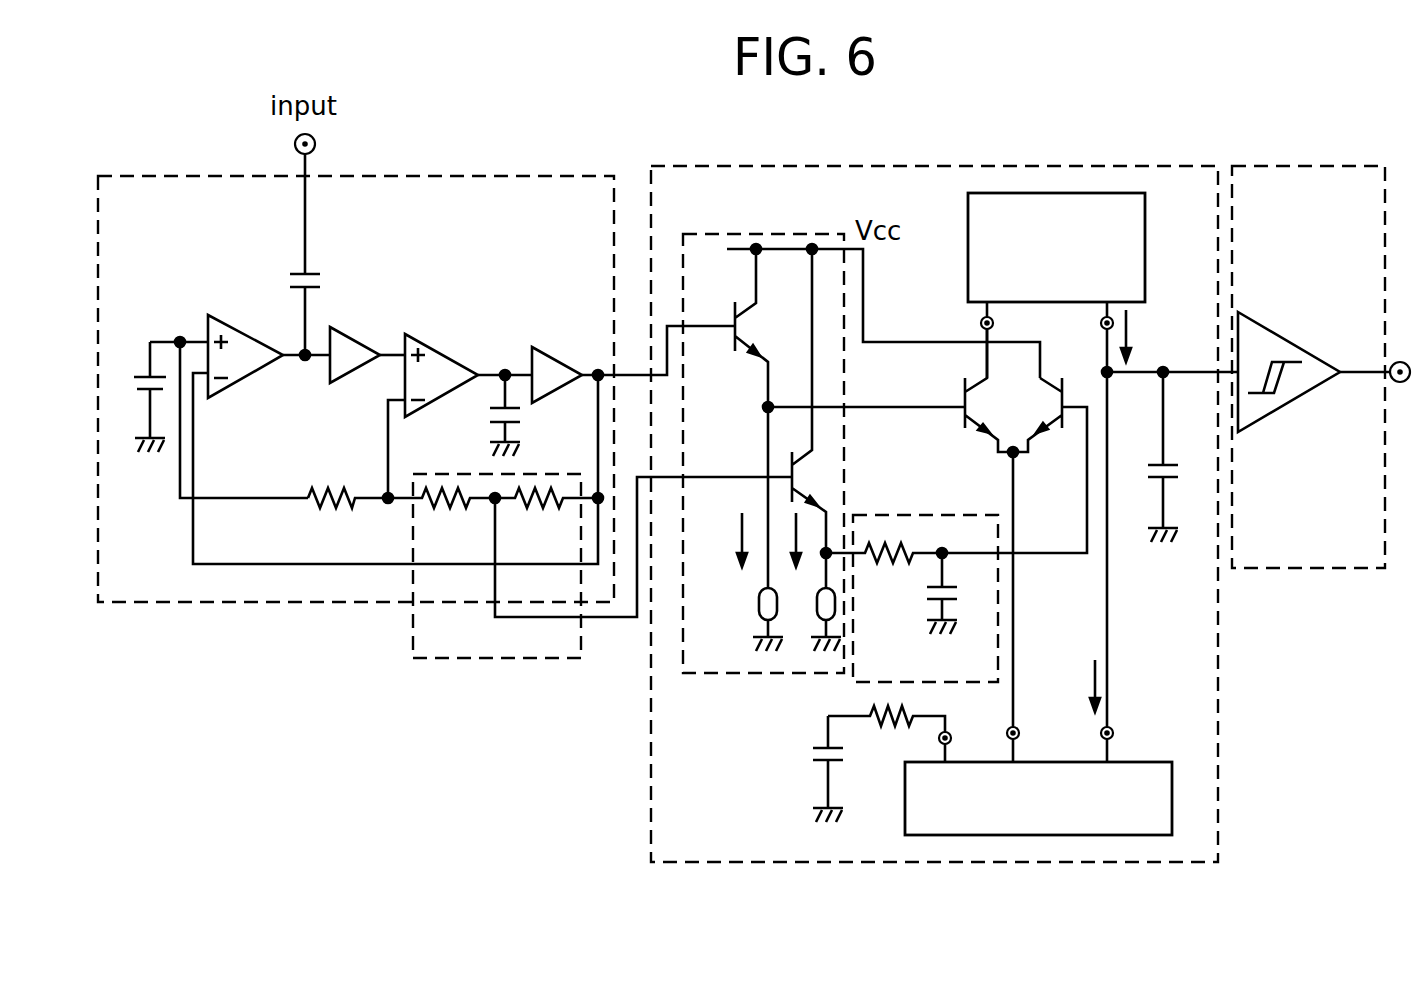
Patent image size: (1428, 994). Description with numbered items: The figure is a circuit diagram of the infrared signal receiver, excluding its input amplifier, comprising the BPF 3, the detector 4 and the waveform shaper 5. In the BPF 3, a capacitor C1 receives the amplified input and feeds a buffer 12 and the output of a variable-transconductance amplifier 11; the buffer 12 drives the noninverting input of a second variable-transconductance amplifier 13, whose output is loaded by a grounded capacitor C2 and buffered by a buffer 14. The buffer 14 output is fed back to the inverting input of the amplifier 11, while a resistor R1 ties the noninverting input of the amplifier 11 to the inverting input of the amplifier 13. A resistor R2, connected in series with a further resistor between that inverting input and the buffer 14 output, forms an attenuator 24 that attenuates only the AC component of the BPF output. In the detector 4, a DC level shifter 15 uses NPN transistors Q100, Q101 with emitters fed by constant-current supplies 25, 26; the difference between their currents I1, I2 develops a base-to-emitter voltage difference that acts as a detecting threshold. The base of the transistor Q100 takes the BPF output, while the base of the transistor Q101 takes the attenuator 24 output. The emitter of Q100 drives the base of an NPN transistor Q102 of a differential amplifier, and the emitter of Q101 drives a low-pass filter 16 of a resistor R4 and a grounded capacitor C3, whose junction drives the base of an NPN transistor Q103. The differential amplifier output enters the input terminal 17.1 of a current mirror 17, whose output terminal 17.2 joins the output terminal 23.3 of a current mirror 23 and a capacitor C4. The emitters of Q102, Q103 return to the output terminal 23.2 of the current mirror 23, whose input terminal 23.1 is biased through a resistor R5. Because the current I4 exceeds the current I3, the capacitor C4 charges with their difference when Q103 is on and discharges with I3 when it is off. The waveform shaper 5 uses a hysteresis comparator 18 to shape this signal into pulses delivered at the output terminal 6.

The BPF 3 is at (437, 174).
The detector 4 is at (1014, 167).
The waveform shaper 5 is at (1312, 166).
The output terminal 6 is at (1400, 360).
The variable-transconductance amplifier 11 is at (208, 322).
The buffer 12 is at (350, 336).
The variable-transconductance amplifier 13 is at (440, 352).
The buffer 14 is at (540, 350).
The DC level shifter 15 is at (735, 676).
The low-pass filter 16 is at (948, 512).
The current mirror 17 is at (1112, 193).
The input terminal 17.1 is at (980, 323).
The output terminal 17.2 is at (1100, 330).
The hysteresis comparator 18 is at (1280, 328).
The current mirror 23 is at (1172, 795).
The input terminal 23.1 is at (938, 740).
The output terminal 23.2 is at (1007, 735).
The output terminal 23.3 is at (1114, 735).
The attenuator 24 is at (413, 634).
The constant-current supply 25 is at (763, 598).
The constant-current supply 26 is at (822, 598).
The capacitor C1 is at (312, 282).
The capacitor C2 is at (522, 412).
The capacitor C3 is at (958, 592).
The capacitor C4 is at (1146, 468).
The resistor R1 is at (318, 487).
The resistor R2 is at (428, 493).
The resistor R4 is at (875, 532).
The resistor R5 is at (870, 712).
The NPN transistor Q100 is at (850, 330).
The NPN transistor Q101 is at (805, 462).
The NPN transistor Q102 is at (970, 383).
The NPN transistor Q103 is at (1053, 455).
The current I1 is at (738, 522).
The current I2 is at (793, 528).
The current I3 is at (1100, 672).
The current I4 is at (1130, 320).